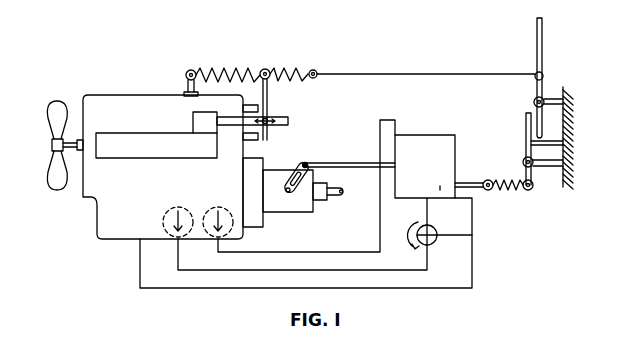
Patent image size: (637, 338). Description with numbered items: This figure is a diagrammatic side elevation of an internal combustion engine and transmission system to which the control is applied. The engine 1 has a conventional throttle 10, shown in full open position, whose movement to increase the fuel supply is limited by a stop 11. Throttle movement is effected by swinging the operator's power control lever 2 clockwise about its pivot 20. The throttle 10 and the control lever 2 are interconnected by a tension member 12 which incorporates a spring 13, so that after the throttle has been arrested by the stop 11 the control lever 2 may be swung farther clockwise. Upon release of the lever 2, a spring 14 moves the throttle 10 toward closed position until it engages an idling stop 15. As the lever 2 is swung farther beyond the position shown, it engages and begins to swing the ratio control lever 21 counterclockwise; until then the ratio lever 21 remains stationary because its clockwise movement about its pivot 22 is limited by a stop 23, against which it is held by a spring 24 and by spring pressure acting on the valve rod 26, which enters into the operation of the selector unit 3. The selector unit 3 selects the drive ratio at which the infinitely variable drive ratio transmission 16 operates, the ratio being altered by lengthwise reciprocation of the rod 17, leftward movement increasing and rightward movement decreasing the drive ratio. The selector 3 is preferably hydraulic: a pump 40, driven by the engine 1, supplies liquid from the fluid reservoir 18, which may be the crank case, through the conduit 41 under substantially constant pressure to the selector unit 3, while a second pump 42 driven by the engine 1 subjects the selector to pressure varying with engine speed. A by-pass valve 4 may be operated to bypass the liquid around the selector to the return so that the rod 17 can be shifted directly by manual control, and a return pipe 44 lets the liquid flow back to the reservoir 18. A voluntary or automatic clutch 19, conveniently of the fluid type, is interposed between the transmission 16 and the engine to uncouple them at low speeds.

The engine 1 is at (114, 94).
The power control lever 2 is at (536, 25).
The drive ratio selector unit 3 is at (425, 166).
The by-pass valve 4 is at (453, 214).
The throttle 10 is at (258, 107).
The stop 11 is at (265, 140).
The tension member 12 is at (368, 74).
The spring 13 is at (308, 47).
The spring 14 is at (243, 48).
The idling stop 15 is at (265, 107).
The infinitely variable drive ratio transmission 16 is at (315, 212).
The transmission control rod 17 is at (364, 163).
The fluid reservoir 18 is at (115, 239).
The clutch 19 is at (265, 218).
The pivot 20 is at (544, 100).
The ratio control lever 21 is at (526, 127).
The pivot 22 is at (532, 166).
The stop 23 is at (547, 143).
The spring 24 is at (518, 188).
The valve rod 26 is at (506, 158).
The pump 40 is at (163, 222).
The conduit 41 is at (427, 210).
The second pump 42 is at (203, 222).
The return pipe 44 is at (140, 290).